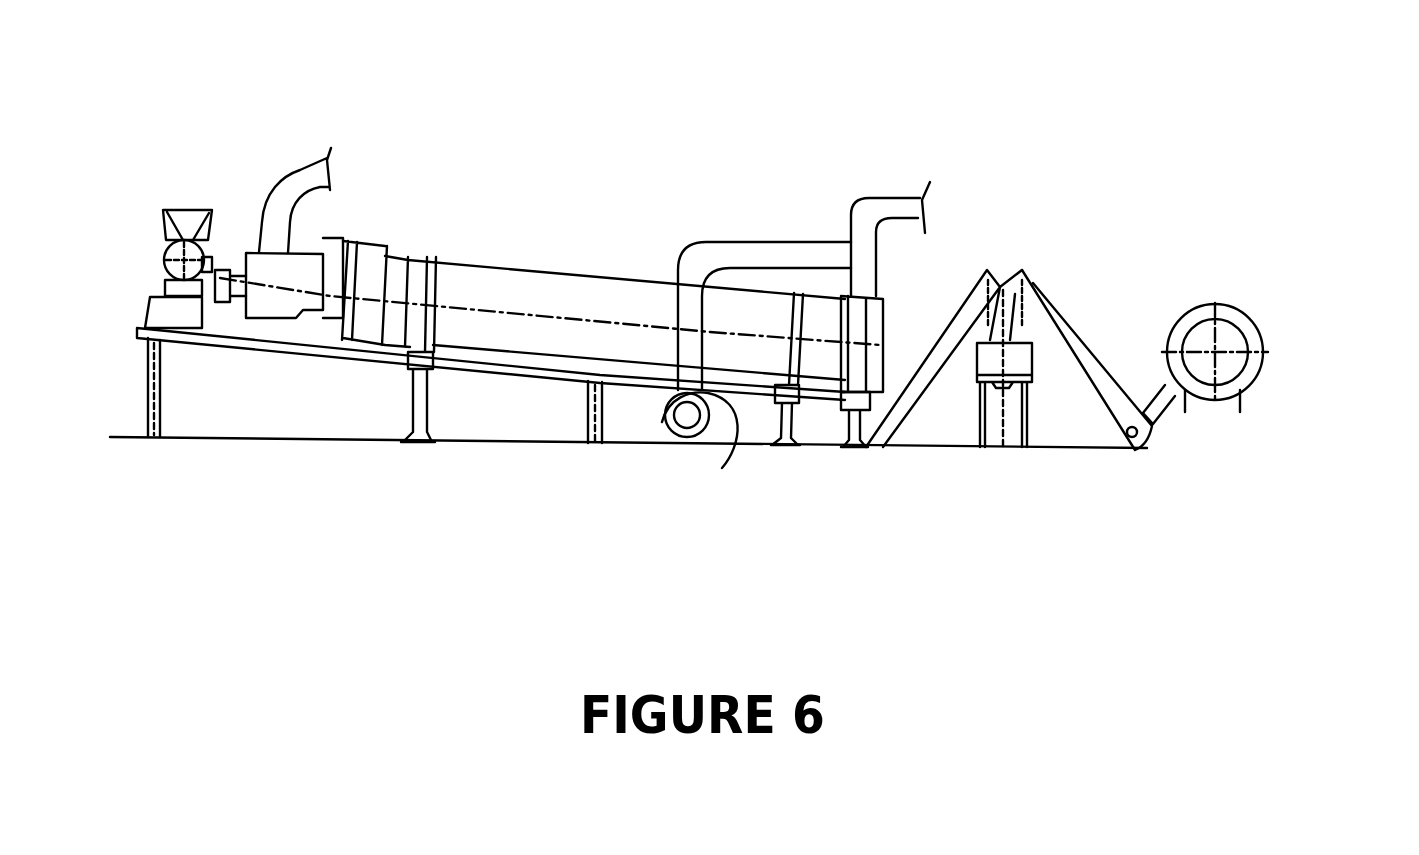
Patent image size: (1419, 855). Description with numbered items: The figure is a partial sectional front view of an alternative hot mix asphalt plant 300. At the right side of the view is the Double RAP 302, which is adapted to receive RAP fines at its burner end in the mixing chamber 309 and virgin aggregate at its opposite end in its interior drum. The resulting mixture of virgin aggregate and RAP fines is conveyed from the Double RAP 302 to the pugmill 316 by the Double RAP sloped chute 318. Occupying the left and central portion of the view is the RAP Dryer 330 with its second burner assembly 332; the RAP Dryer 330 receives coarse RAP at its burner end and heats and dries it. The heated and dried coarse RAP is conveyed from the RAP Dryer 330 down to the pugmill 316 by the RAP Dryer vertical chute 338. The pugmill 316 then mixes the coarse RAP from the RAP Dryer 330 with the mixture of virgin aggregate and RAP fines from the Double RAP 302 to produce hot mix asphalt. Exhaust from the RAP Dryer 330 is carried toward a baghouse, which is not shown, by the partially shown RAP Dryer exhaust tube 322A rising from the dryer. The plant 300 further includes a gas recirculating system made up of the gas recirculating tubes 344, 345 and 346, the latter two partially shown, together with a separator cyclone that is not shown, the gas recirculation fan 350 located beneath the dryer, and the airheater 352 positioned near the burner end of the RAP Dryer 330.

The alternative hot mix asphalt plant 300 is at (780, 150).
The second burner assembly 332 is at (167, 210).
The gas recirculating tube 346 is at (300, 170).
The airheater 352 is at (290, 268).
The RAP Dryer 330 is at (563, 287).
The gas recirculating tube 344 is at (728, 245).
The RAP Dryer exhaust tube 322A is at (880, 197).
The gas recirculation fan 350 is at (662, 420).
The gas recirculating tube 345 is at (722, 468).
The RAP Dryer vertical chute 338 is at (845, 404).
The pugmill 316 is at (973, 345).
The Double RAP sloped chute 318 is at (1070, 343).
The mixing chamber 309 is at (1200, 312).
The Double RAP 302 is at (1260, 377).